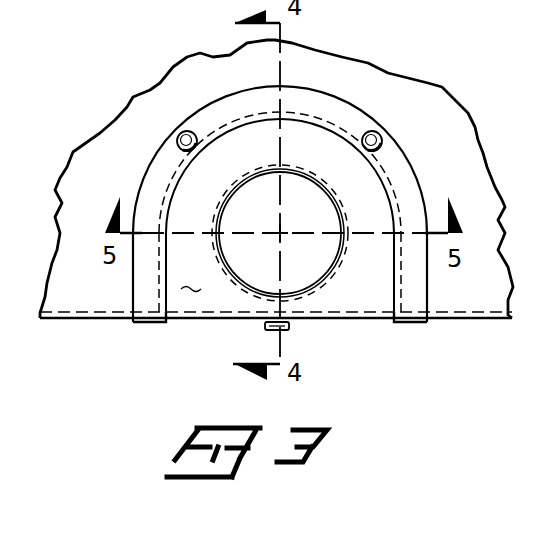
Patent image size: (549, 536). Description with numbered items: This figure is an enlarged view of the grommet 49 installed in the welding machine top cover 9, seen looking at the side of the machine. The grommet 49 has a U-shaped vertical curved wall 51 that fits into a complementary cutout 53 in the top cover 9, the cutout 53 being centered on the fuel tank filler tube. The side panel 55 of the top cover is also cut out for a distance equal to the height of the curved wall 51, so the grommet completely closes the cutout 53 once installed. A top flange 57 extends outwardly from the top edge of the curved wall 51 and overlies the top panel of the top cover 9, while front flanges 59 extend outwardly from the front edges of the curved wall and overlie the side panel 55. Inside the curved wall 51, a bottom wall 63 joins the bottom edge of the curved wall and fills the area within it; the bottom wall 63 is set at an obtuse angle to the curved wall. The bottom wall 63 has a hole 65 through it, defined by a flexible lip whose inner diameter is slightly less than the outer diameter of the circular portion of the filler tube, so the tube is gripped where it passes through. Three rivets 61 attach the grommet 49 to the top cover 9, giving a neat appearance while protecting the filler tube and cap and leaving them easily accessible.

The welding machine top cover 9 is at (80, 142).
The grommet 49 is at (276, 223).
The curved wall 51 is at (238, 131).
The cutout 53 is at (360, 178).
The side panel 55 is at (481, 321).
The top flange 57 is at (313, 103).
The front flanges 59 is at (150, 324).
The rivets 61 is at (180, 135).
The bottom wall 63 is at (194, 277).
The hole 65 is at (330, 206).